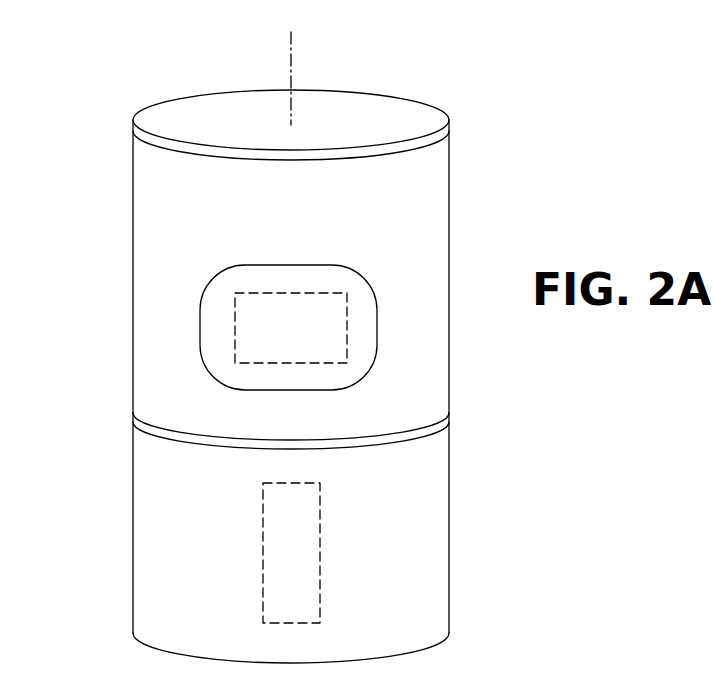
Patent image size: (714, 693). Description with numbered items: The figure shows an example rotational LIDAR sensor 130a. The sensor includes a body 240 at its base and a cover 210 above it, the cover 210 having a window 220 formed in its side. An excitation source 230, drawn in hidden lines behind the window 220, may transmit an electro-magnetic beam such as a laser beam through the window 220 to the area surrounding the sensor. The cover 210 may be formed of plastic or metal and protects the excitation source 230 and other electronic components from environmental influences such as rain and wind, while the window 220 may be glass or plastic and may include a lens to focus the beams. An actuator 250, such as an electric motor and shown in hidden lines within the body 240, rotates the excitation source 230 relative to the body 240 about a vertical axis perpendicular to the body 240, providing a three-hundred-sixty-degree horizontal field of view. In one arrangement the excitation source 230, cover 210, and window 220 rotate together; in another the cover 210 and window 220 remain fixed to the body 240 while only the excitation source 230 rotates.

The rotational LIDAR sensor 130a is at (398, 82).
The cover 210 is at (172, 185).
The window 220 is at (218, 333).
The excitation source 230 is at (230, 308).
The body 240 is at (182, 557).
The actuator 250 is at (320, 595).